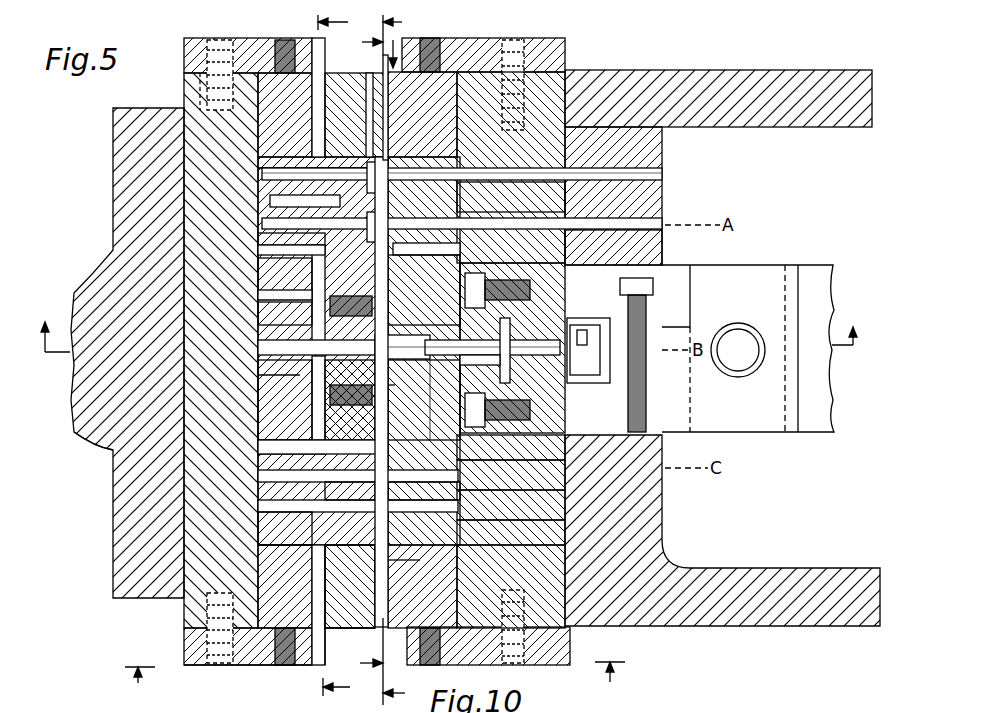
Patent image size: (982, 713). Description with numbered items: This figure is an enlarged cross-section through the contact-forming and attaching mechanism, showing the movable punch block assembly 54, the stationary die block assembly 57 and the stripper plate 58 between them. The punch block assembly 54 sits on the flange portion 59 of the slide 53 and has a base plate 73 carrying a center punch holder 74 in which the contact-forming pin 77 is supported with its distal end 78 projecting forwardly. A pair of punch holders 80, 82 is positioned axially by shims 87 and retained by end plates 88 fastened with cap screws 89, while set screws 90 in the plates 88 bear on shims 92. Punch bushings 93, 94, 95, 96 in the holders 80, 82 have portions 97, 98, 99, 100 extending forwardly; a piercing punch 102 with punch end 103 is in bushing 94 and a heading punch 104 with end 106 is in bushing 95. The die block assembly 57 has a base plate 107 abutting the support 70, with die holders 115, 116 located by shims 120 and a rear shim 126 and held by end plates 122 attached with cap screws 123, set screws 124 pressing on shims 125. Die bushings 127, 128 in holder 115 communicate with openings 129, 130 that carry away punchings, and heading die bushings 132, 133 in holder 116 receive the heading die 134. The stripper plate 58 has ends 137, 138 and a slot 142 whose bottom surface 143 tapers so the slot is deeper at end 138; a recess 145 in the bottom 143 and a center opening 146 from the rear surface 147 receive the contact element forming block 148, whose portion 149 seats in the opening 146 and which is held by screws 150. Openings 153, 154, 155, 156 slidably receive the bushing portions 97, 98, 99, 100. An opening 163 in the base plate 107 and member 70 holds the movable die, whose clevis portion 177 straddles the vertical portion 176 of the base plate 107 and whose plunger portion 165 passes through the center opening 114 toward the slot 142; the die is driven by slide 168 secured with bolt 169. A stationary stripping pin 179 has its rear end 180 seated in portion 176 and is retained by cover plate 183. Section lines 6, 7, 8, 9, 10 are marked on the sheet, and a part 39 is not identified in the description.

The slide 53 is at (96, 278).
The flange portion 59 is at (105, 455).
The punch holder 80 is at (268, 128).
The base plate 73 is at (210, 118).
The end plates 88 is at (184, 52).
The cap screws 89 is at (222, 40).
The set screws 90 is at (286, 40).
The shims 92 is at (292, 88).
The punch bushing 93 is at (296, 156).
The end of stripper plate 137 is at (333, 75).
The punch bushing portion 97 is at (352, 100).
The opening 153 is at (362, 140).
The shims 125 is at (432, 92).
The end plates 122 is at (570, 643).
The set screws 124 is at (438, 40).
The cap screws 123 is at (530, 40).
The die holder 115 is at (462, 138).
The die bushing 127 is at (455, 190).
The base plate 107 is at (560, 106).
The stationary die block assembly 57 is at (652, 68).
The opening 163 is at (664, 250).
The support 70 is at (800, 627).
The die holder 116 is at (470, 566).
The heading die bushing 132 is at (480, 458).
The heading die 134 is at (478, 482).
The rear shim 126 is at (478, 505).
The heading die bushing 133 is at (478, 540).
The opening 129 is at (664, 174).
The opening 130 is at (664, 222).
The punch bushing 94 is at (270, 208).
The opening 154 is at (380, 204).
The piercing punch 102 is at (290, 244).
The shims 87 is at (268, 250).
The punch bushing portion 98 is at (356, 280).
The die bushing 128 is at (458, 252).
The punch end 103 is at (416, 270).
The shims 120 is at (436, 282).
The block portion 149 is at (340, 316).
The screws 150 is at (300, 300).
The center punch holder 74 is at (272, 300).
The contact-forming pin 77 is at (268, 350).
The contact element forming block 148 is at (392, 340).
The distal end 78 is at (300, 372).
The center opening 146 is at (312, 384).
The opening 155 is at (344, 420).
The recess 145 is at (382, 388).
The center opening 114 is at (436, 362).
The heading punch 104 is at (296, 450).
The punch bushing 95 is at (270, 478).
The punch bushing 96 is at (270, 508).
The punch bushing portion 99 is at (350, 496).
The heading punch end 106 is at (440, 490).
The punch holder 82 is at (268, 552).
The rear surface 147 is at (318, 572).
The punch bushing portion 100 is at (356, 545).
The opening 156 is at (350, 586).
The bottom surface 143 is at (392, 570).
The slot 142 is at (383, 628).
The rod 39 is at (382, 62).
The end of stripper plate 138 is at (345, 630).
The clevis portion 177 is at (528, 286).
The plunger portion 165 is at (500, 345).
The stationary stripping pin 179 is at (478, 362).
The vertical portion 176 is at (585, 384).
The cover plate 183 is at (600, 370).
The rear end 180 is at (622, 286).
The slide 168 is at (812, 265).
The bolt 169 is at (740, 330).
The section line 10 is at (450, 326).
The section line 9 is at (375, 686).
The section line 7 is at (340, 354).
The section line 8 is at (364, 360).
The section line 6 is at (400, 357).
The movable punch block assembly 54 is at (258, 668).
The stripper plate 58 is at (325, 665).